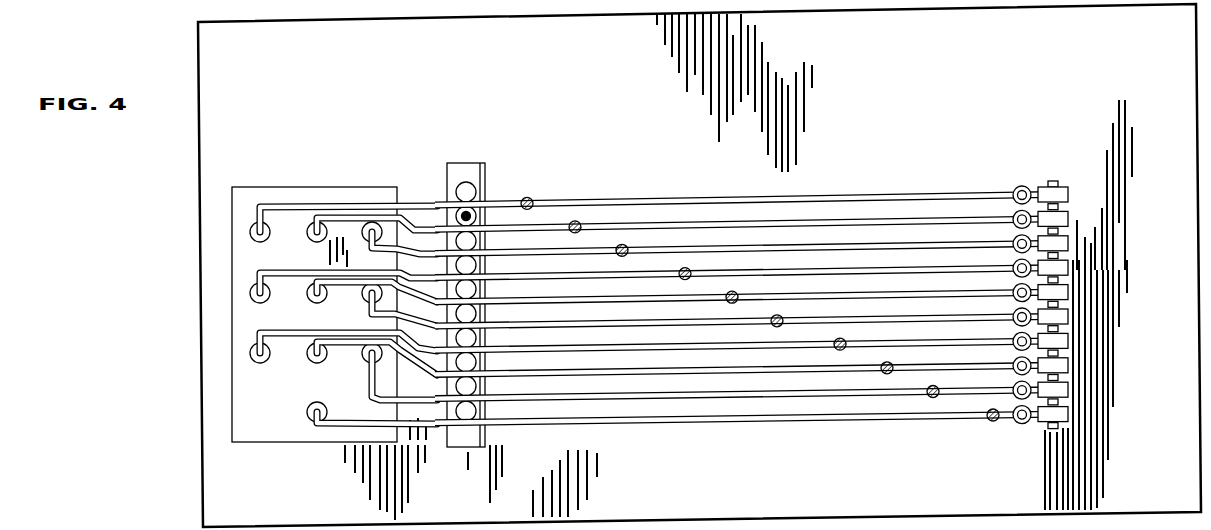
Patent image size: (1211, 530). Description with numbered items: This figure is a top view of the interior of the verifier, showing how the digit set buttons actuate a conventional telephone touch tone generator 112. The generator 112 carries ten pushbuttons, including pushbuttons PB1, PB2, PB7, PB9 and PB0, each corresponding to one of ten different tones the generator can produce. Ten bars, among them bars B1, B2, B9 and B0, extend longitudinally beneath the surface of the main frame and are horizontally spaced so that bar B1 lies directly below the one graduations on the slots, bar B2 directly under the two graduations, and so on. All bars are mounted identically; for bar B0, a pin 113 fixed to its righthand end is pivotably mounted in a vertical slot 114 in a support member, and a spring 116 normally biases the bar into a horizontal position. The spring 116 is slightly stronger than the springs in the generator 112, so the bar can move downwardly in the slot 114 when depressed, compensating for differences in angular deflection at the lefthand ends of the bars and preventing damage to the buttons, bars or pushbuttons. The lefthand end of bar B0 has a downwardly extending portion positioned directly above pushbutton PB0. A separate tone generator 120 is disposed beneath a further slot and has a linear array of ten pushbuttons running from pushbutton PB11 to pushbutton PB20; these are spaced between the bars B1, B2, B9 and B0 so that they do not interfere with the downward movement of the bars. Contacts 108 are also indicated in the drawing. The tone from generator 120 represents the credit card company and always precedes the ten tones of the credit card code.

The contacts 108 is at (530, 199).
The telephone touch tone generator 112 is at (334, 331).
The pin 113 is at (1053, 429).
The vertical slot 114 is at (1068, 418).
The spring 116 is at (1017, 421).
The tone generator 120 is at (491, 303).
The pushbutton PB1 is at (263, 245).
The pushbutton PB2 is at (315, 245).
The pushbutton PB7 is at (259, 364).
The pushbutton PB9 is at (364, 360).
The pushbutton PB0 is at (327, 411).
The pushbutton PB11 is at (475, 190).
The pushbutton PB20 is at (480, 420).
The bar B1 is at (647, 200).
The bar B2 is at (698, 222).
The bar B9 is at (666, 392).
The bar B0 is at (653, 427).